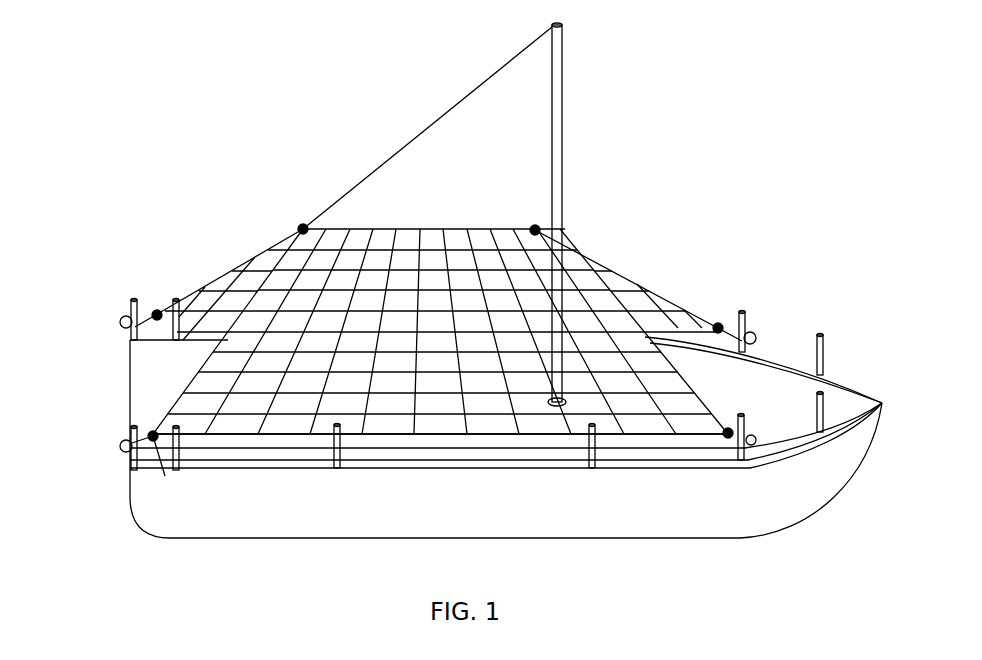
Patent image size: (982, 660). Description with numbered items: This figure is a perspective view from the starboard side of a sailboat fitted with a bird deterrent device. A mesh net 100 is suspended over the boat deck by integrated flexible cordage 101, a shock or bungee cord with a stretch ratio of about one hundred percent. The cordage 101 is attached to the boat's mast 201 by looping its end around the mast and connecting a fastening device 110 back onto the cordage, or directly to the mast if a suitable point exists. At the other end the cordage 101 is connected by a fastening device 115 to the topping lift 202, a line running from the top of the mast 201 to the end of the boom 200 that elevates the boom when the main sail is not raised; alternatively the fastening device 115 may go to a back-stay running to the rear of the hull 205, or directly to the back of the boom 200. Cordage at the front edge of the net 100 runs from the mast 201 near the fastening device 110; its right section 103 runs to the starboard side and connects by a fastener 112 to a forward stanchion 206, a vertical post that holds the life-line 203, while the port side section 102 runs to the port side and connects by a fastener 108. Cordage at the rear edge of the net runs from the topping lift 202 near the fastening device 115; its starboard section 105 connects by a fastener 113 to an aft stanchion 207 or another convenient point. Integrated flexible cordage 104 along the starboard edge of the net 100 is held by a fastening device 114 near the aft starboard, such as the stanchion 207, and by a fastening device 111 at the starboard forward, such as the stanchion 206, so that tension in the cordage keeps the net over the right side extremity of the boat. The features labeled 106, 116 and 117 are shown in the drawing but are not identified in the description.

The mesh net 100 is at (208, 403).
The integrated flexible cordage 101 is at (480, 229).
The port side section of cordage 102 is at (650, 285).
The right section of cordage 103 is at (700, 405).
The integrated flexible cordage 104 is at (230, 438).
The starboard section of cordage 105 is at (152, 433).
The left side net extension 106 is at (255, 268).
The fastener 108 is at (748, 322).
The fastening device 110 is at (565, 232).
The fastening device 111 is at (755, 440).
The fastener 112 is at (735, 455).
The fastener 113 is at (150, 470).
The fastening device 114 is at (125, 450).
The fastening device 115 is at (303, 229).
The rear left eye loop 116 is at (130, 330).
The rear left post 117 is at (128, 312).
The boom 200 is at (432, 270).
The mast 201 is at (565, 85).
The topping lift 202 is at (432, 122).
The life-line 203 is at (318, 450).
The hull 205 is at (520, 512).
The stanchion 206 is at (715, 460).
The stanchion 207 is at (130, 455).